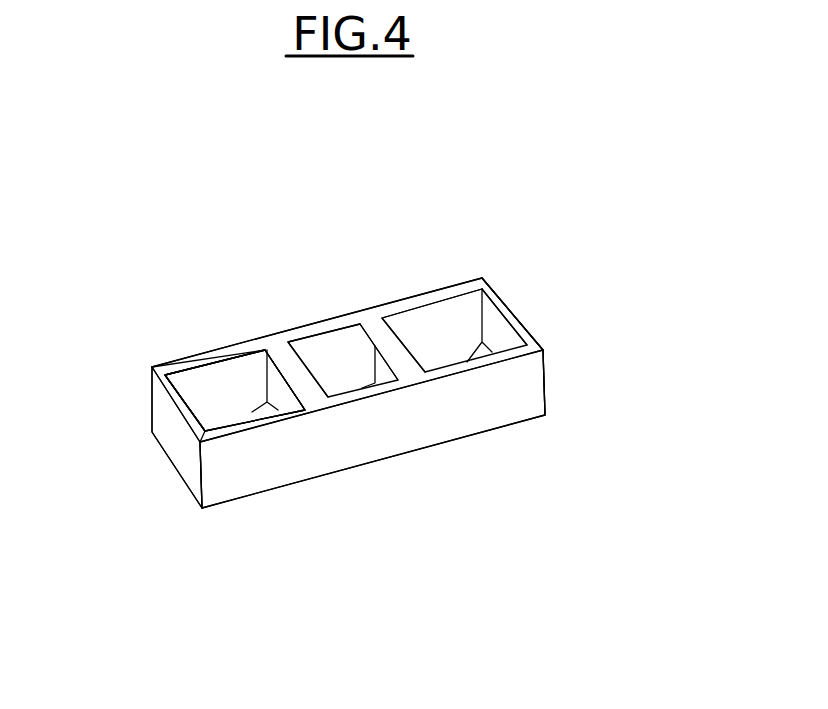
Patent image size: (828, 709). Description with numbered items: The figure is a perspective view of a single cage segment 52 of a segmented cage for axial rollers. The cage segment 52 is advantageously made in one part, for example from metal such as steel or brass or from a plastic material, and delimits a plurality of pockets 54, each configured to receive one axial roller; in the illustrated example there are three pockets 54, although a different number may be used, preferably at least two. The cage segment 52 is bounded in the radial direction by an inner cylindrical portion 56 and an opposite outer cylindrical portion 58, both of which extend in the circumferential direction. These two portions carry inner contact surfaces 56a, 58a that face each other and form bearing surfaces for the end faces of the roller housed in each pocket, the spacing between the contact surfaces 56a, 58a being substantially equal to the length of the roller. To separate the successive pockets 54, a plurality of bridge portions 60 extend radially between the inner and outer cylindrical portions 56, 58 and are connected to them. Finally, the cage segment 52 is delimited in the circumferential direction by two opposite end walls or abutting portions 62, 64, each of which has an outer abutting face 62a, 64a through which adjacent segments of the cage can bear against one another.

The cage segment 52 is at (189, 532).
The pocket 54 is at (283, 400).
The inner cylindrical portion 56 is at (317, 331).
The inner contact surface 56a is at (206, 392).
The outer cylindrical portion 58 is at (360, 452).
The inner contact surface 58a is at (263, 410).
The bridge portion 60 is at (290, 367).
The end wall 62 is at (178, 404).
The outer abutting face 62a is at (169, 435).
The end wall 64 is at (510, 317).
The outer abutting face 64a is at (533, 337).